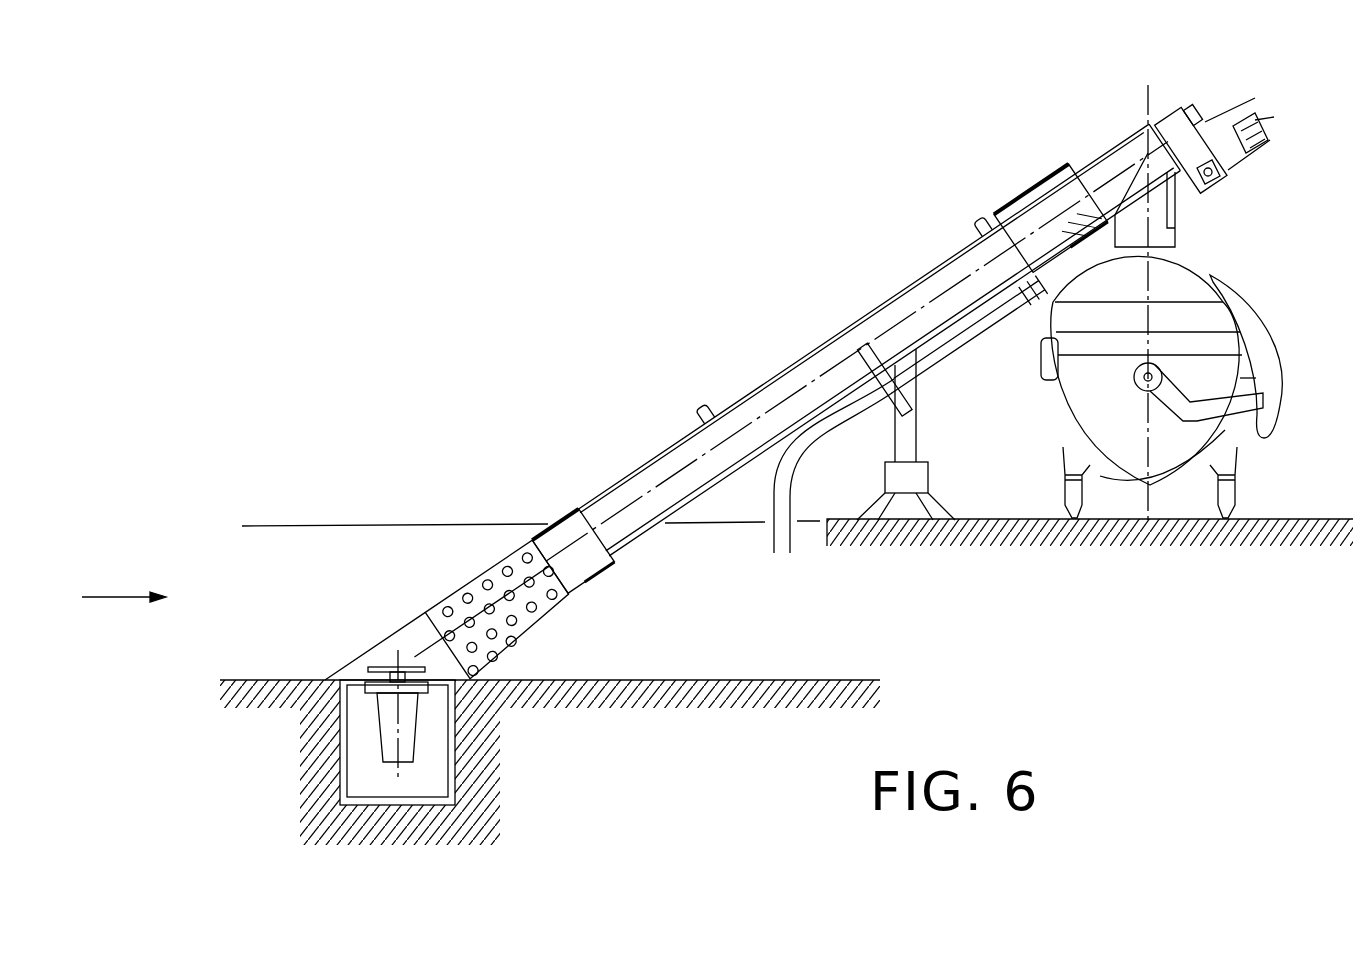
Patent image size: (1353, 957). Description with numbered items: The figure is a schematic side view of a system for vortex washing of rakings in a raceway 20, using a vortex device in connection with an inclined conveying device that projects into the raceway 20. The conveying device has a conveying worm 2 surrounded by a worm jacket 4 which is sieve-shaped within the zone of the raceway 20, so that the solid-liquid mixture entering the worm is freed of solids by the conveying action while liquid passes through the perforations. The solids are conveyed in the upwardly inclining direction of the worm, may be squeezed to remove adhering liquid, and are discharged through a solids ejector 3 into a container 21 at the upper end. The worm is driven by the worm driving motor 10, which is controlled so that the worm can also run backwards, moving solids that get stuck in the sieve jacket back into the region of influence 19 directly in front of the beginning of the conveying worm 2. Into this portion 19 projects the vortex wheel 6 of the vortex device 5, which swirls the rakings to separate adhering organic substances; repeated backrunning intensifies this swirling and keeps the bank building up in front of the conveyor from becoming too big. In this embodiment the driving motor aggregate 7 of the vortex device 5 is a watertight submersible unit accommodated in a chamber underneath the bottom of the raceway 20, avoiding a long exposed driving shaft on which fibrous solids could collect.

The conveying worm 2 is at (803, 387).
The solids ejector 3 is at (1160, 236).
The worm jacket 4 is at (540, 628).
The vortex device 5 is at (590, 735).
The vortex wheel 6 is at (427, 670).
The driving motor aggregate 7 is at (408, 735).
The worm driving motor 10 is at (1228, 118).
The region of influence 19 is at (412, 637).
The raceway 20 is at (488, 601).
The container 21 is at (1218, 367).